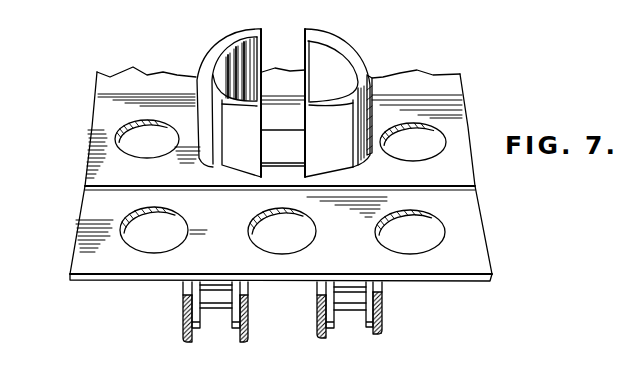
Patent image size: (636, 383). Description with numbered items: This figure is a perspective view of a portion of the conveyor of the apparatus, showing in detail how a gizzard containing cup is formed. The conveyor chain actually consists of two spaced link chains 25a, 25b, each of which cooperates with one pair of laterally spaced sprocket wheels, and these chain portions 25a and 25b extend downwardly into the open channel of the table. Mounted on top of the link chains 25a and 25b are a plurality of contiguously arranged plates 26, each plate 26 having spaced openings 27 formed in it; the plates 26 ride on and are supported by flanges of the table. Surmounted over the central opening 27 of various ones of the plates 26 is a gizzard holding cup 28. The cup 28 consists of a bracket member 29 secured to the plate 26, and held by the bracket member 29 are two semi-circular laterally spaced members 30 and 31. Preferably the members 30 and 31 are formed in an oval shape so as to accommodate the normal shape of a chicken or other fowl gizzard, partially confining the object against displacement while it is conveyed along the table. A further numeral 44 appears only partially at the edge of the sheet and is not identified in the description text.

The link chain 25a is at (383, 302).
The link chain 25b is at (185, 310).
The plate 26 is at (464, 127).
The opening 27 is at (252, 241).
The gizzard holding cup 28 is at (307, 88).
The bracket member 29 is at (372, 76).
The semi-circular member 30 is at (242, 28).
The semi-circular member 31 is at (359, 88).
The partial numeral (cut off) 44 is at (78, 6).